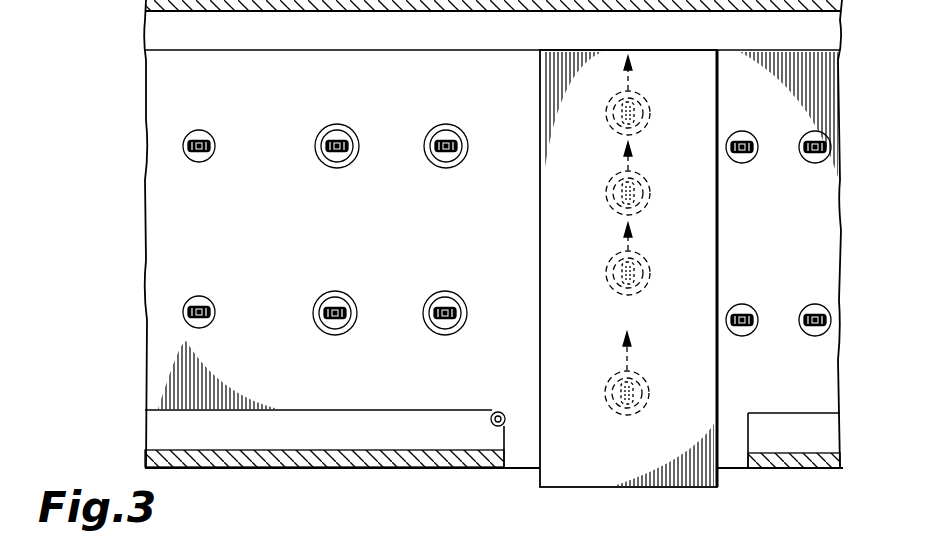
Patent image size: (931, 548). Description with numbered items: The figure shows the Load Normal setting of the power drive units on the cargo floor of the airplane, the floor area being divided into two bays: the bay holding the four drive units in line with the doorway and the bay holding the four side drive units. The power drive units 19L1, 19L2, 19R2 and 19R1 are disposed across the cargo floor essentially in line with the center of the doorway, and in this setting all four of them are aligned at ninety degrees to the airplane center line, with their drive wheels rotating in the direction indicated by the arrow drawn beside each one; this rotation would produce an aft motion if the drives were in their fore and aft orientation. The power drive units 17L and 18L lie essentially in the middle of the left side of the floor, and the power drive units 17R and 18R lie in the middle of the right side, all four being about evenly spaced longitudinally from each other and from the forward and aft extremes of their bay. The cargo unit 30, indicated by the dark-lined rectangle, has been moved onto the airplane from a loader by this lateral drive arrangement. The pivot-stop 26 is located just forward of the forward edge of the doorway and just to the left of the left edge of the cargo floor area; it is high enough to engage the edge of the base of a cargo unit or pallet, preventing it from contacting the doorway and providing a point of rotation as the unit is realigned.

The power drive unit 17R is at (326, 164).
The power drive unit 18R is at (438, 165).
The power drive unit 17L is at (328, 333).
The power drive unit 18L is at (438, 333).
The power drive unit 19R1 is at (651, 113).
The power drive unit 19R2 is at (652, 197).
The power drive unit 19L2 is at (651, 278).
The power drive unit 19L1 is at (650, 394).
The pivot-stop 26 is at (497, 412).
The cargo unit 30 is at (538, 476).